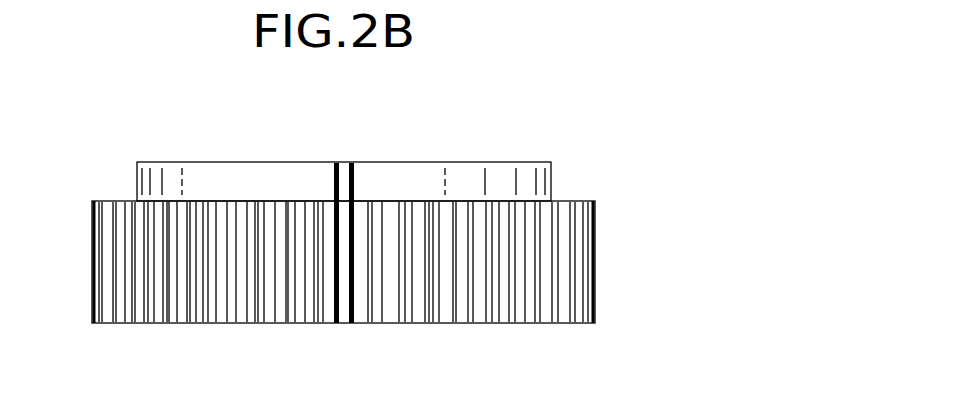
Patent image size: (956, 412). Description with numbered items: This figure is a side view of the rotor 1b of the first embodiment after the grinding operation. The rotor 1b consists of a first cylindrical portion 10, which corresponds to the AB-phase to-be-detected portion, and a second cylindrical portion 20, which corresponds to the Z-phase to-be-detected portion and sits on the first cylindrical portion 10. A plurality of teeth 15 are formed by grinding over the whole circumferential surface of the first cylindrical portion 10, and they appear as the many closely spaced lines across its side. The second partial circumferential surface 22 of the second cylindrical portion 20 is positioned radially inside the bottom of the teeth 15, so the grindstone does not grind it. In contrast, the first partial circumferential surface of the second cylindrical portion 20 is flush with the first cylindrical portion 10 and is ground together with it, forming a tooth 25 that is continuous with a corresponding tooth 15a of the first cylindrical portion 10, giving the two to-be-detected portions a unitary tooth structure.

The rotor 1b is at (528, 123).
The first cylindrical portion 10 is at (607, 272).
The teeth 15 is at (476, 315).
The tooth 15a is at (343, 317).
The second cylindrical portion 20 is at (589, 182).
The second partial circumferential surface 22 is at (458, 173).
The tooth 25 is at (345, 180).